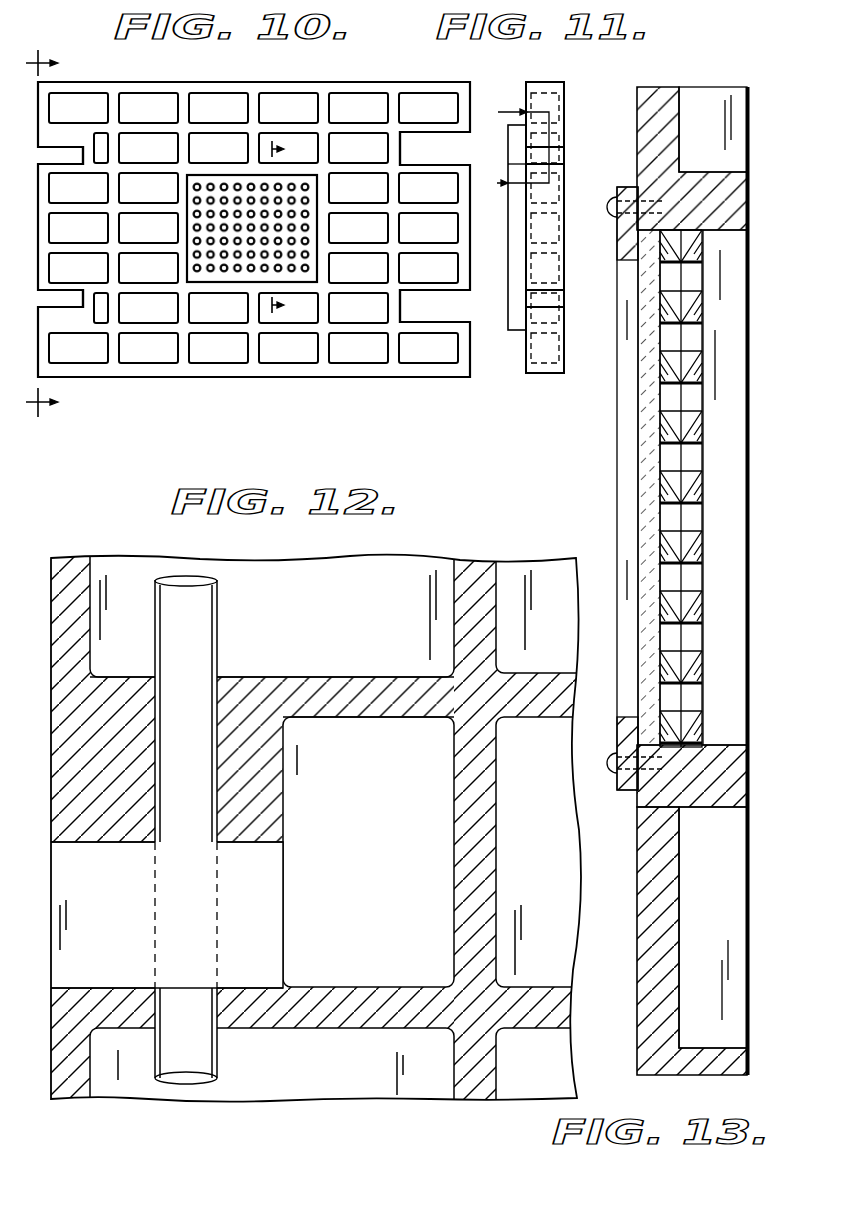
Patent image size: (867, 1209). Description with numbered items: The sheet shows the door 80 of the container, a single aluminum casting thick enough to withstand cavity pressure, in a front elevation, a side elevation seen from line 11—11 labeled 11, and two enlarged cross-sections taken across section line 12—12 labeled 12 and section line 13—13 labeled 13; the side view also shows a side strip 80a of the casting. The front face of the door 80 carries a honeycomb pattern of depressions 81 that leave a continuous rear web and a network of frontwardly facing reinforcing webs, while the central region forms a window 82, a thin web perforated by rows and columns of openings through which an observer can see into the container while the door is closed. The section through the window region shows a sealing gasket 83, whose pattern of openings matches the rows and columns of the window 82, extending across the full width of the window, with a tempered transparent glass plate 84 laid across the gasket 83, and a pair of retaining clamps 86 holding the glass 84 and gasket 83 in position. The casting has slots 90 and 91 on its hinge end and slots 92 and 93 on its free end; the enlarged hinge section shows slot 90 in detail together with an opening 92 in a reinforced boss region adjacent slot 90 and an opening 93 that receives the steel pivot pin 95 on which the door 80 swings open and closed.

In FIG. 10, the door 80 is at (228, 385).
In FIG. 11, the door 80 is at (545, 383).
In FIG. 13, the door 80 is at (712, 75).
In FIG. 12, the door 80 is at (200, 1107).
In FIG. 11, the side strip of panel 80a is at (510, 250).
In FIG. 10, the depressions 81 is at (343, 100).
In FIG. 13, the depressions 81 is at (688, 938).
In FIG. 12, the depressions 81 is at (268, 677).
In FIG. 10, the window 82 is at (313, 222).
In FIG. 13, the window 82 is at (698, 376).
In FIG. 13, the sealing gasket 83 is at (672, 386).
In FIG. 13, the tempered transparent glass plate 84 is at (640, 488).
In FIG. 13, the retaining clamps 86 is at (627, 187).
In FIG. 10, the slot 90 is at (80, 161).
In FIG. 11, the slot 90 is at (566, 153).
In FIG. 12, the slot 90 is at (122, 850).
In FIG. 10, the slot 91 is at (80, 304).
In FIG. 11, the slot 91 is at (566, 307).
In FIG. 10, the slot / opening 92 is at (432, 137).
In FIG. 12, the slot / opening 92 is at (167, 857).
In FIG. 10, the slot / opening 93 is at (450, 318).
In FIG. 12, the slot / opening 93 is at (178, 987).
In FIG. 12, the steel pivot pin 95 is at (218, 924).
In FIG. 10, the section line 11— 11 is at (59, 233).
In FIG. 11, the section line 12— 12 is at (509, 148).
In FIG. 10, the section line 13— 13 is at (291, 228).